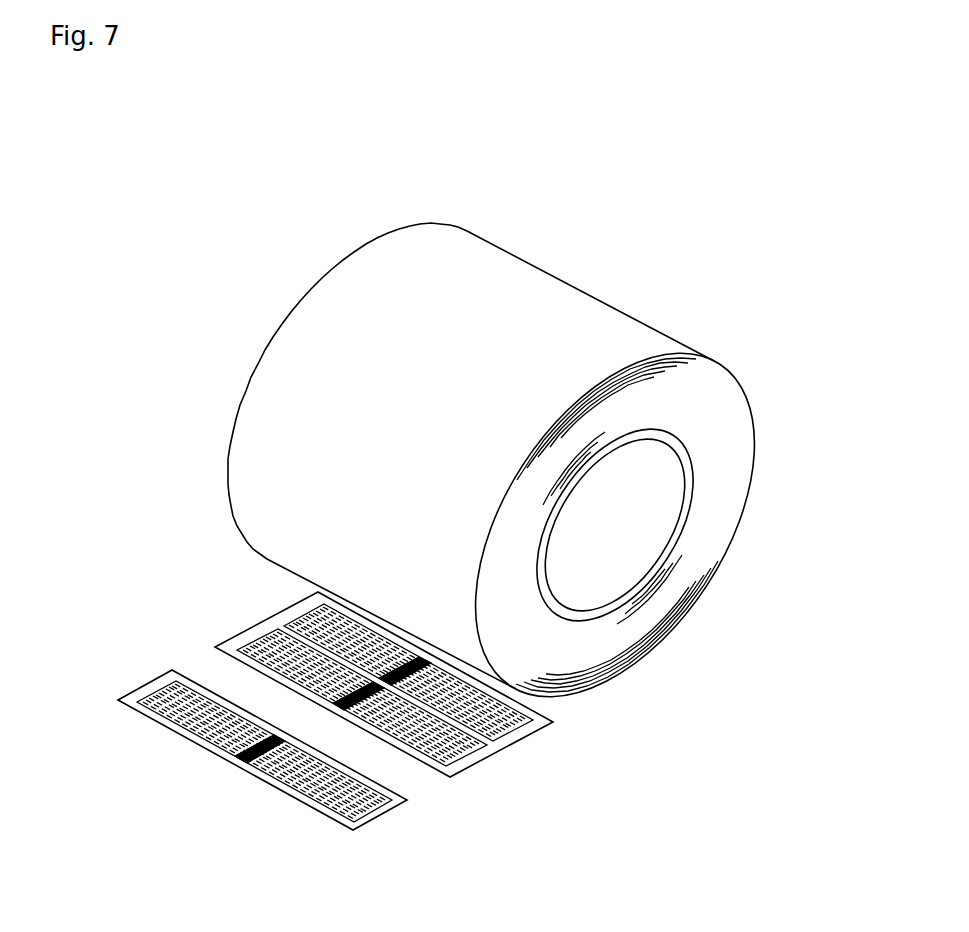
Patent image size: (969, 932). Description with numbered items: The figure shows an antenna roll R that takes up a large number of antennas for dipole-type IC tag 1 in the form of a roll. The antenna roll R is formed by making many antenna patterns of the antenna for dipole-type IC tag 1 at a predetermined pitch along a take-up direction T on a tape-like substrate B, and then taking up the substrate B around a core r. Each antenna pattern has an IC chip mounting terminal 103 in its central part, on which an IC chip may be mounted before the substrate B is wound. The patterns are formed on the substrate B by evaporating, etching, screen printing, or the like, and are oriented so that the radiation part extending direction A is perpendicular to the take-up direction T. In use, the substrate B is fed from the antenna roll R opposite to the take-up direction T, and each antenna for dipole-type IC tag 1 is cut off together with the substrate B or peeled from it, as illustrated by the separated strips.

The antenna roll R is at (395, 192).
The tape-like substrate B is at (333, 340).
The core r is at (680, 530).
The antenna for dipole-type IC tag 1 is at (133, 684).
The IC chip mounting terminal 103 is at (382, 672).
The take-up direction T is at (645, 712).
The radiation part extending direction A is at (570, 743).